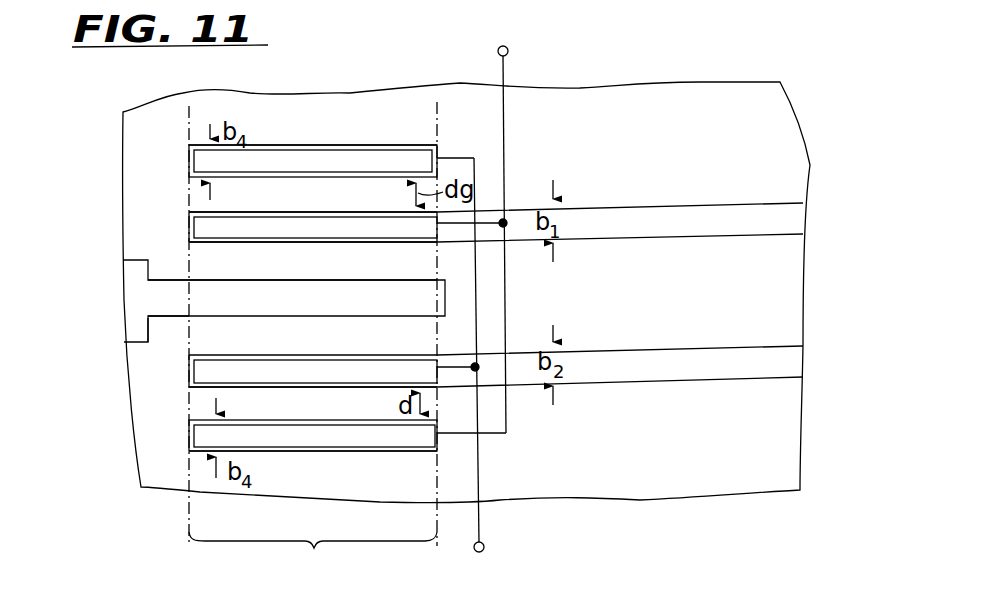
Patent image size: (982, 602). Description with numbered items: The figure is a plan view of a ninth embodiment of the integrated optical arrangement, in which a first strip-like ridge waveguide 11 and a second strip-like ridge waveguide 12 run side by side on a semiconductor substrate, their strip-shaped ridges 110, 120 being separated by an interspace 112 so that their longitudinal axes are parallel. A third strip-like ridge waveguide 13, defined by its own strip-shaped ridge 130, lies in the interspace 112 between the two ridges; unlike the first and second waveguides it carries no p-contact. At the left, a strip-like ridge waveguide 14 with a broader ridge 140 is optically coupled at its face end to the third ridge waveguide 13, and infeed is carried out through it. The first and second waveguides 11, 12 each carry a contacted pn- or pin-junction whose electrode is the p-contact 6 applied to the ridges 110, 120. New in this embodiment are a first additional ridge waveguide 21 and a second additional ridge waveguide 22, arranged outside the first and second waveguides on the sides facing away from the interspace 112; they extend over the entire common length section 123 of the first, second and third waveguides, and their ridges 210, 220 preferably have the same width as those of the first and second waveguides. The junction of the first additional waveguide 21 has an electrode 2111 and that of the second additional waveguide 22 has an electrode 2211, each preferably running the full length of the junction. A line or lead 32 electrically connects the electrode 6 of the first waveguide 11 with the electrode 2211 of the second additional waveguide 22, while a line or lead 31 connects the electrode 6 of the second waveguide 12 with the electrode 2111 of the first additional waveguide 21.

The p-contact 6 is at (297, 228).
The first strip-like ridge waveguide 11 is at (340, 252).
The second strip-like ridge waveguide 12 is at (337, 394).
The third strip-like ridge waveguide 13 is at (252, 318).
The strip-like ridge waveguide 14 is at (137, 252).
The first additional ridge waveguide 21 is at (404, 137).
The second additional ridge waveguide 22 is at (399, 458).
The line or lead 31 is at (476, 300).
The line or lead 32 is at (505, 282).
The strip-shaped ridge 110 is at (222, 212).
The interspace 112 is at (351, 272).
The strip-shaped ridge 120 is at (266, 388).
The common length section 123 is at (313, 345).
The strip-shaped ridge 130 is at (207, 281).
The strip-shaped ridge 140 is at (141, 344).
The ridge or rib 210 is at (288, 144).
The ridge or rib 220 is at (292, 453).
The electrode 2111 is at (332, 158).
The electrode 2211 is at (358, 433).